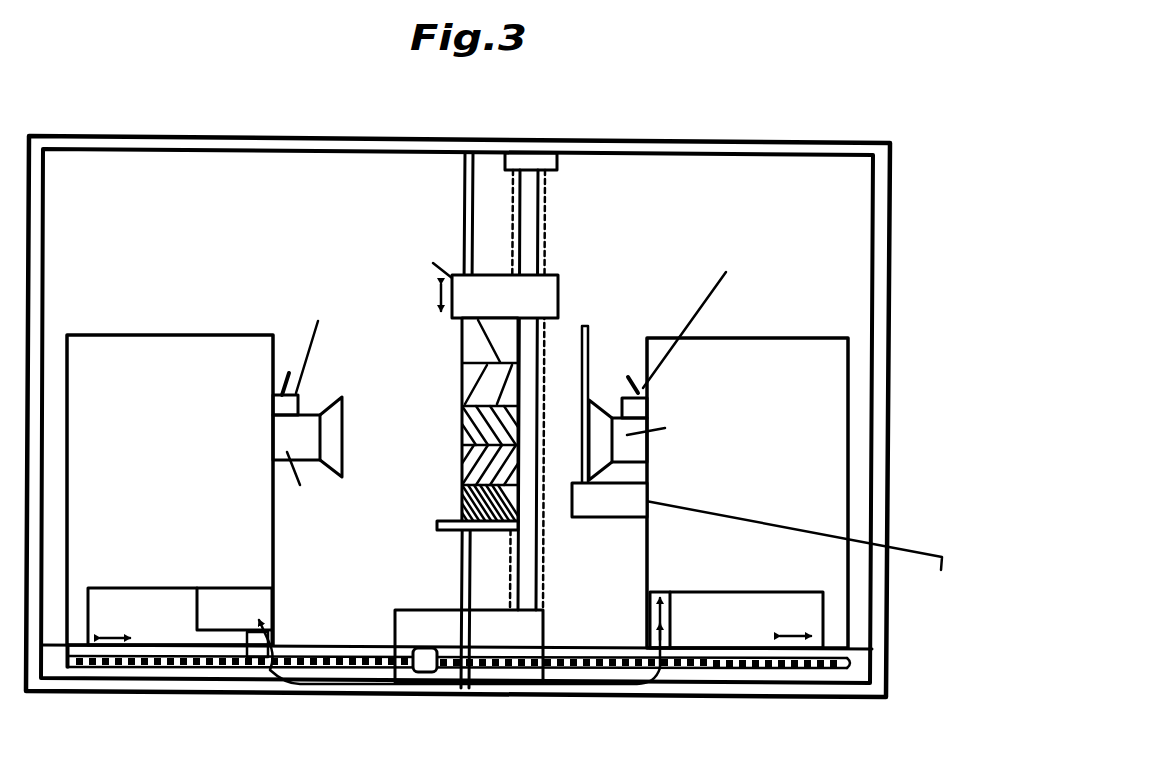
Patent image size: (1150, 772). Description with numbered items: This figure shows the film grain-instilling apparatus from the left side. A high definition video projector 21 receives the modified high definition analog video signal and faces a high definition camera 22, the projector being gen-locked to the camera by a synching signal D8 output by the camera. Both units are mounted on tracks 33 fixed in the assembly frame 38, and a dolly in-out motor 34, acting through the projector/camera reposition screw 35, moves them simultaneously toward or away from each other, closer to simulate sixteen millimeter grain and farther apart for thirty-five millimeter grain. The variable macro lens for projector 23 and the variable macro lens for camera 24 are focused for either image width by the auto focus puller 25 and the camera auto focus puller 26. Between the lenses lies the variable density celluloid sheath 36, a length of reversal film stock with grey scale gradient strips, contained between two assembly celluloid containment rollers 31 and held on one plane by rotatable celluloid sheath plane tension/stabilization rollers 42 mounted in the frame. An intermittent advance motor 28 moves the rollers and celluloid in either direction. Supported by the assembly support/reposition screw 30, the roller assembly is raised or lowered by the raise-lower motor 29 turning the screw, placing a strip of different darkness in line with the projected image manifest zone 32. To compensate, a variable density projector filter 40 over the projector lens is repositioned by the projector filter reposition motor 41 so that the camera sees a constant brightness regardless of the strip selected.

The high definition video projector 21 is at (783, 350).
The high definition camera 22 is at (106, 345).
The variable macro lens for projector 23 is at (633, 453).
The variable macro lens for camera 24 is at (300, 430).
The auto focus puller 25 is at (648, 410).
The camera auto focus puller 26 is at (272, 405).
The intermittent advance motor 28 is at (548, 280).
The roller/celluloid sheath assembly raise-lower motor 29 is at (522, 641).
The assembly support/reposition screw 30 is at (548, 192).
The assembly celluloid containment rollers 31 is at (440, 525).
The projected image manifest zone 32 is at (453, 404).
The tracks 33 is at (290, 647).
The projector and camera dolly in-out motor 34 is at (395, 622).
The projector/camera reposition screw 35 is at (847, 668).
The variable density celluloid sheath 36 is at (462, 341).
The assembly frame 38 is at (697, 145).
The variable density projector filter 40 is at (585, 320).
The projector filter reposition motor 41 is at (630, 518).
The celluloid sheath plane tension/stabilization rollers 42 is at (460, 575).
The synching signal D8 is at (270, 670).